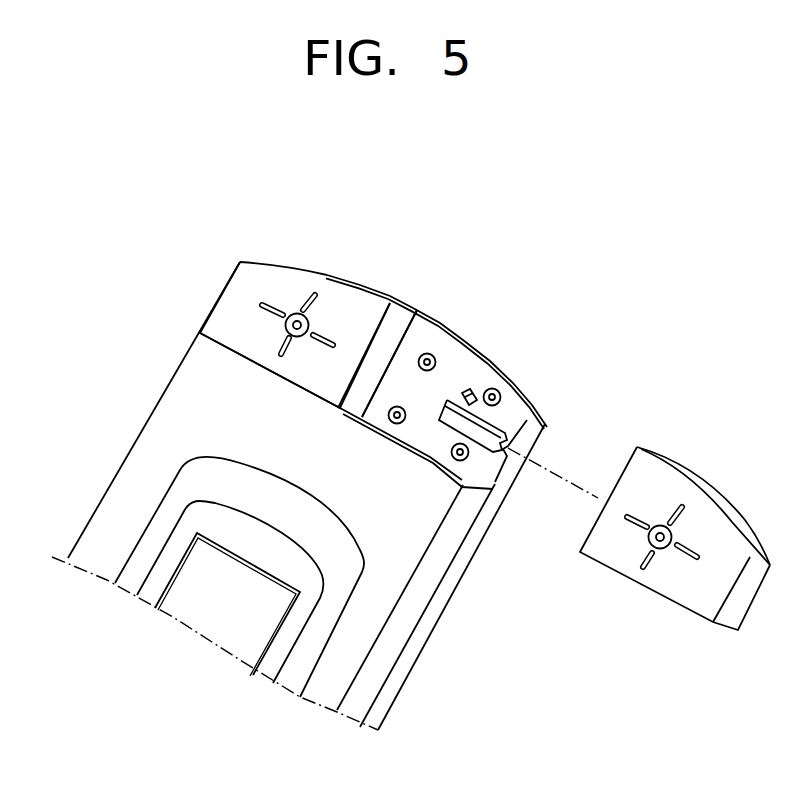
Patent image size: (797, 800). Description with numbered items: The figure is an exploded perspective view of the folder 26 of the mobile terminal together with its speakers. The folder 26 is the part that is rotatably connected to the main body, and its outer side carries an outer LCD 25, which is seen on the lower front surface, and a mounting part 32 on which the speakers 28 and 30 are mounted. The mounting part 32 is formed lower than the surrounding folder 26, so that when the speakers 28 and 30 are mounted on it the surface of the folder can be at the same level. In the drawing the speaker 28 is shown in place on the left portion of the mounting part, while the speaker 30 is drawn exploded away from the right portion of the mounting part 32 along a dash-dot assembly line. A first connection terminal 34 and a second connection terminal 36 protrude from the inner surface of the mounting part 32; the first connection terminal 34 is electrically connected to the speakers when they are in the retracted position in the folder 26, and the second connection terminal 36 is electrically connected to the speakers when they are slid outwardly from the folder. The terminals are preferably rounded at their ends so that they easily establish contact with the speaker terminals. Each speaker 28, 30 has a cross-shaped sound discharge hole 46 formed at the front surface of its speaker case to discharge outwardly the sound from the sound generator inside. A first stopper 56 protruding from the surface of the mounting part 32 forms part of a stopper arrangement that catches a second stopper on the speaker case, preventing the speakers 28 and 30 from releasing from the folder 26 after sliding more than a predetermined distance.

The outer LCD 25 is at (193, 565).
The folder 26 is at (452, 626).
The speaker 28 is at (256, 283).
The speaker 30 is at (715, 497).
The mounting part 32 is at (452, 362).
The first connection terminal 34 is at (430, 353).
The second connection terminal 36 is at (495, 390).
The sound discharge hole 46 is at (300, 312).
The first stopper 56 is at (468, 392).